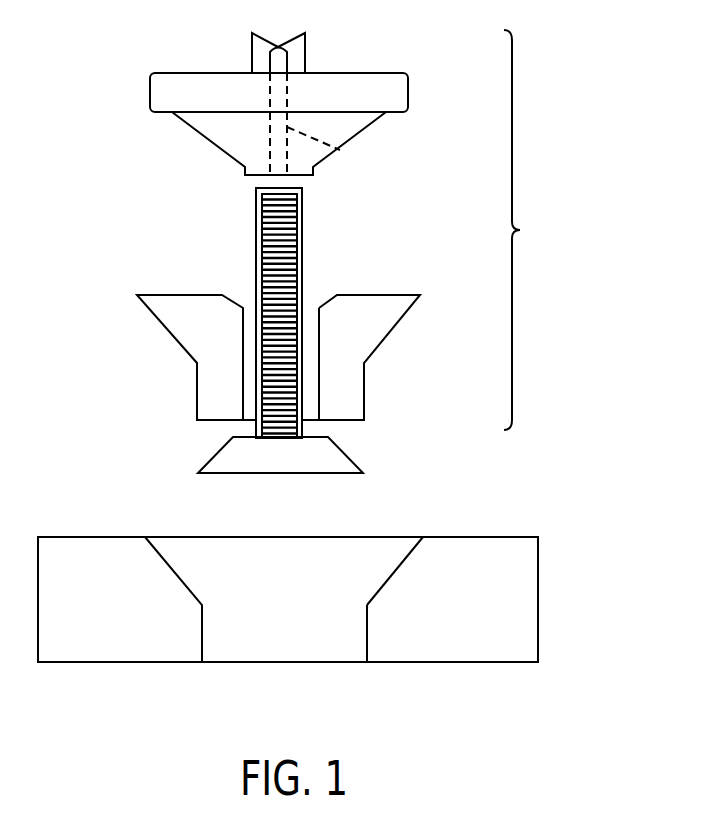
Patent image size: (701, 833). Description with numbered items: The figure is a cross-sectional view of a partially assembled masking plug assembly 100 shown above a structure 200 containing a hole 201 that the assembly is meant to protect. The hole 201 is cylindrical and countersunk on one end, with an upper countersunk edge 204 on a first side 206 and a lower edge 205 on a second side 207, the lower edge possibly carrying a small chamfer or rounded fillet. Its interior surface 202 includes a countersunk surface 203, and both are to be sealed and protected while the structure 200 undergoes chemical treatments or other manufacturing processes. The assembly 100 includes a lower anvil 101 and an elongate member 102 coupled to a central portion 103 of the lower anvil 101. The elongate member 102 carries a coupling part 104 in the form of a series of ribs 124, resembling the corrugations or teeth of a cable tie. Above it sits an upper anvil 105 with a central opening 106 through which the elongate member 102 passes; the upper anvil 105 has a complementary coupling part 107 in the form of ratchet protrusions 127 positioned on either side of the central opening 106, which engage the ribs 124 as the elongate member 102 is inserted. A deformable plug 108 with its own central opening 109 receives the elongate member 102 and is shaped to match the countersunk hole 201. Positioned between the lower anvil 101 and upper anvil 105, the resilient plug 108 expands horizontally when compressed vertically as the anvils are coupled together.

The masking plug assembly 100 is at (527, 230).
The lower anvil 101 is at (340, 448).
The elongate member 102 is at (304, 231).
The central portion 103 is at (258, 434).
The coupling part 104 is at (268, 263).
The upper anvil 105 is at (408, 90).
The central opening 106 is at (333, 147).
The complementary coupling part 107 is at (297, 45).
The deformable plug 108 is at (172, 337).
The central opening 109 is at (305, 310).
The series of ribs 124 is at (266, 219).
The ratchet protrusions 127 is at (297, 62).
The structure 200 is at (540, 585).
The hole 201 is at (280, 640).
The interior surface 202 is at (365, 640).
The countersunk surface 203 is at (380, 587).
The upper countersunk edge 204 is at (425, 537).
The lower edge 205 is at (368, 662).
The first side 206 is at (286, 519).
The second side 207 is at (310, 694).